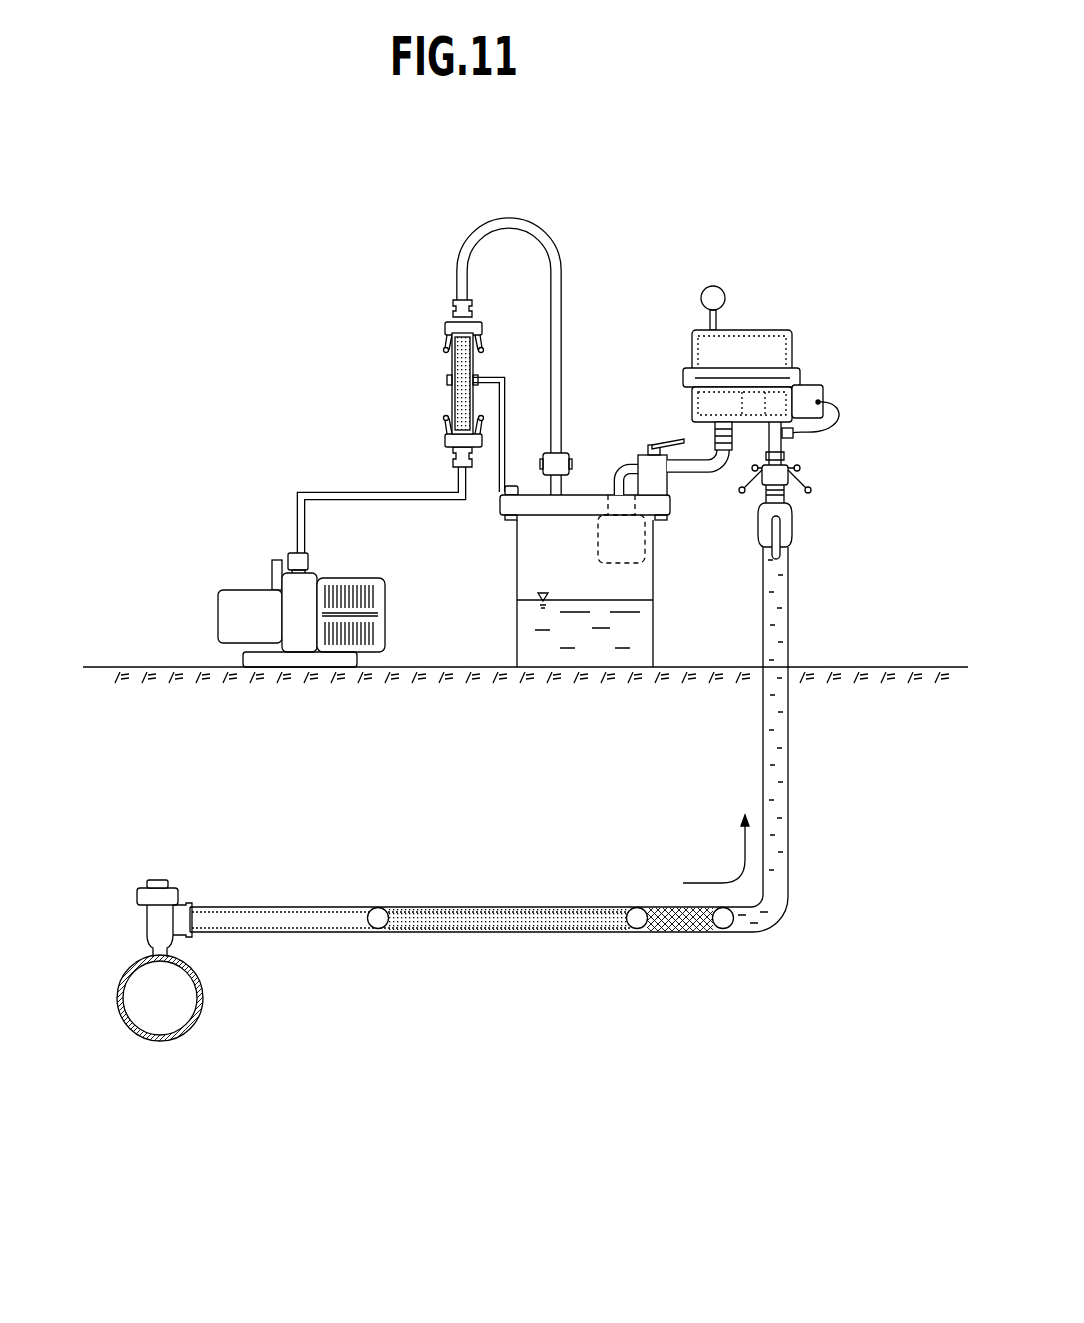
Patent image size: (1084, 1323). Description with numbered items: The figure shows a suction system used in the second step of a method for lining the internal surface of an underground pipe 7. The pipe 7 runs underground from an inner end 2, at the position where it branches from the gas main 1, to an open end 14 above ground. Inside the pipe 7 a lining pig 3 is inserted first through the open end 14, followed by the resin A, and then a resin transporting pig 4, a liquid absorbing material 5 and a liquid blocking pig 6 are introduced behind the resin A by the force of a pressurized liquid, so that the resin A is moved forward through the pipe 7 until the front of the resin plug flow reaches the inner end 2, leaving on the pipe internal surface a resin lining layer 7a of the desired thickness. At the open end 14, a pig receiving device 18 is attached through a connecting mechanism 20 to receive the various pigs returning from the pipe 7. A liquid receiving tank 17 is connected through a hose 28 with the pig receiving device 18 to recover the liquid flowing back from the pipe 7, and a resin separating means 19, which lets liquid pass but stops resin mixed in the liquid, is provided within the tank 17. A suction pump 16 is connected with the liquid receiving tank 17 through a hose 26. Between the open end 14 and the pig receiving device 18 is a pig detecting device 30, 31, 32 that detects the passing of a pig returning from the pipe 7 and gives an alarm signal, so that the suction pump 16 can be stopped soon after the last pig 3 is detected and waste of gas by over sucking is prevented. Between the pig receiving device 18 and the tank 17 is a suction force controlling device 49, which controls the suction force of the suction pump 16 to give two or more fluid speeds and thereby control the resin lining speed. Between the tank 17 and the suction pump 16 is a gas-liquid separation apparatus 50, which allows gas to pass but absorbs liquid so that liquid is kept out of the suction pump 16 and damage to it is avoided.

The gas main 1 is at (148, 1038).
The inner end 2 is at (150, 905).
The lining pig 3 is at (383, 929).
The resin transporting pig 4 is at (640, 930).
The liquid absorbing material 5 is at (655, 907).
The liquid blocking pig 6 is at (712, 910).
The pipe 7 is at (788, 626).
The resin lining layer 7a is at (273, 922).
The open end 14 is at (790, 548).
The suction pump 16 is at (296, 605).
The liquid receiving tank 17 is at (582, 532).
The pig receiving device 18 is at (766, 330).
The resin separating means 19 is at (632, 548).
The connecting mechanism 20 is at (780, 475).
The hose 26 is at (508, 218).
The hose 28 is at (689, 478).
The pig detecting device 30 is at (793, 436).
The pig detecting device 31 is at (823, 395).
The pig detecting device 32 is at (826, 433).
The suction force controlling device 49 is at (650, 480).
The gas-liquid separation apparatus 50 is at (456, 372).
The resin A is at (430, 905).